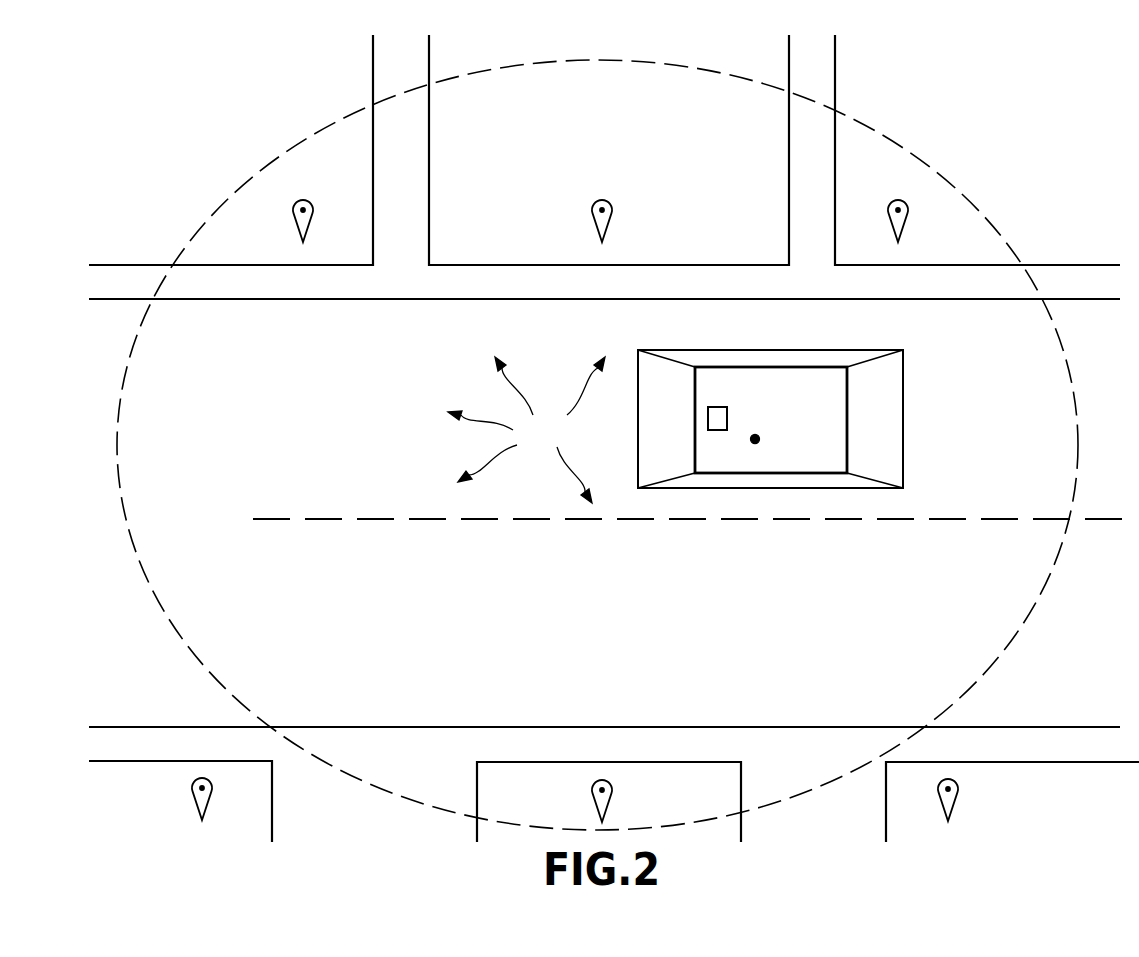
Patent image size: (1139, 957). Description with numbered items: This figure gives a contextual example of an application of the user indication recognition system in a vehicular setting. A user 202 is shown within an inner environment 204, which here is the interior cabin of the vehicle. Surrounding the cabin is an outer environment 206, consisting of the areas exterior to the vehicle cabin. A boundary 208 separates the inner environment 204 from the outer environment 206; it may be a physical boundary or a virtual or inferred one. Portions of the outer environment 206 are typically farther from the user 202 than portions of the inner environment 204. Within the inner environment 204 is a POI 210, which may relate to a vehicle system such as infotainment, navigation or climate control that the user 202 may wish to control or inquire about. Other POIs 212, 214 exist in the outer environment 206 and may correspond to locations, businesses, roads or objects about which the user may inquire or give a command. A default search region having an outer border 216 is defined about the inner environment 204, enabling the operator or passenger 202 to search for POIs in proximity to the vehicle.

The user 202 is at (755, 444).
The inner environment 204 is at (805, 385).
The outer environment 206 is at (526, 430).
The boundary 208 is at (820, 476).
The POI 210 is at (717, 407).
The POI 212 is at (297, 224).
The POI 214 is at (196, 802).
The outer border 216 is at (937, 170).